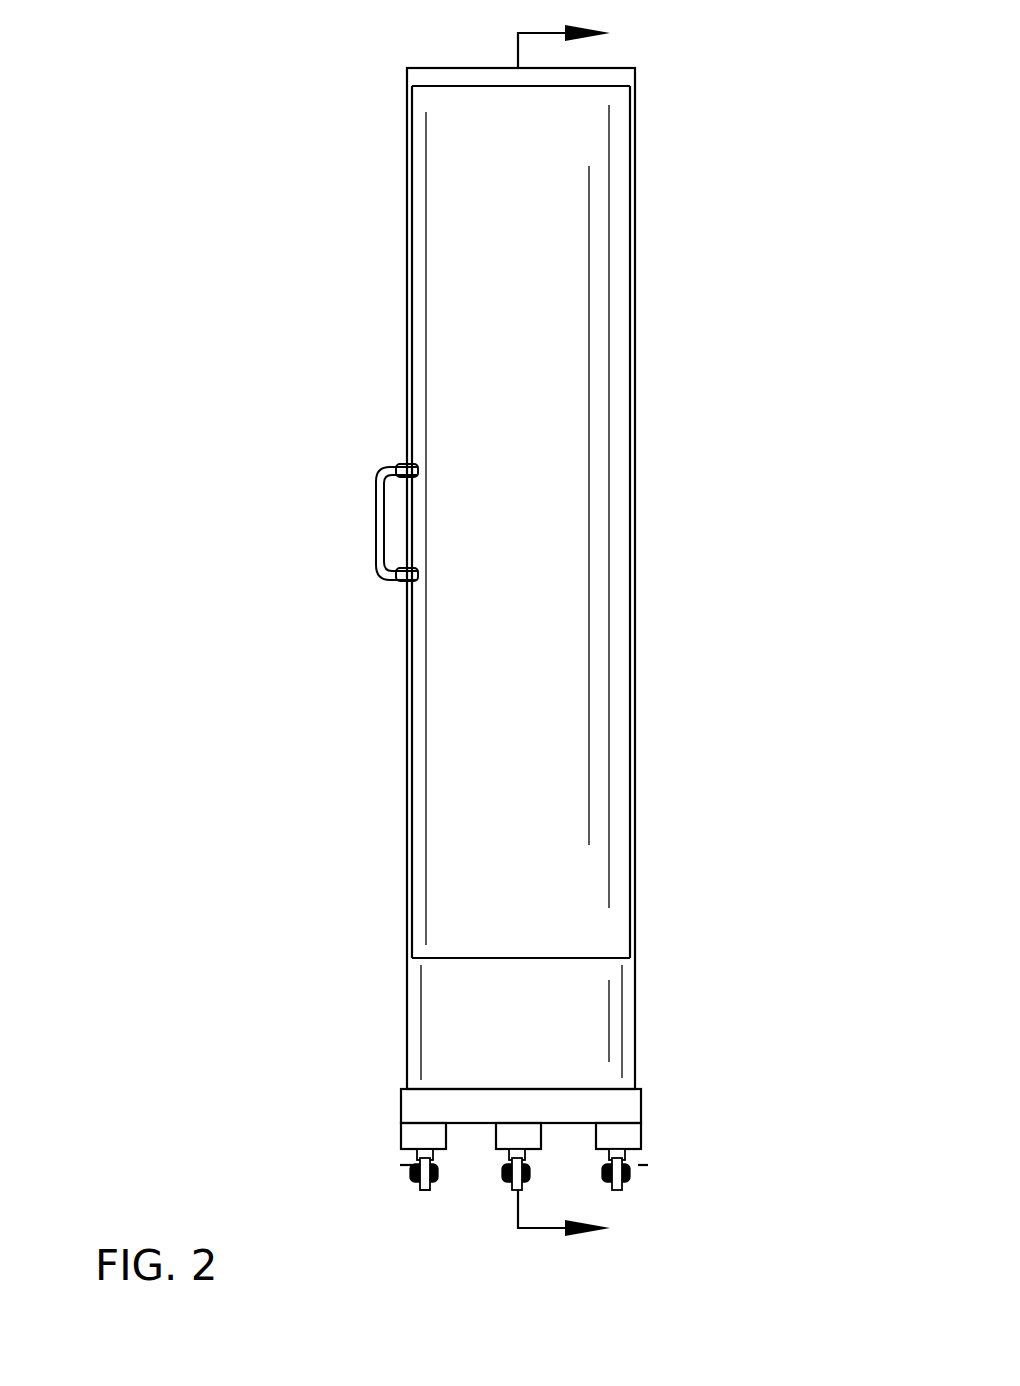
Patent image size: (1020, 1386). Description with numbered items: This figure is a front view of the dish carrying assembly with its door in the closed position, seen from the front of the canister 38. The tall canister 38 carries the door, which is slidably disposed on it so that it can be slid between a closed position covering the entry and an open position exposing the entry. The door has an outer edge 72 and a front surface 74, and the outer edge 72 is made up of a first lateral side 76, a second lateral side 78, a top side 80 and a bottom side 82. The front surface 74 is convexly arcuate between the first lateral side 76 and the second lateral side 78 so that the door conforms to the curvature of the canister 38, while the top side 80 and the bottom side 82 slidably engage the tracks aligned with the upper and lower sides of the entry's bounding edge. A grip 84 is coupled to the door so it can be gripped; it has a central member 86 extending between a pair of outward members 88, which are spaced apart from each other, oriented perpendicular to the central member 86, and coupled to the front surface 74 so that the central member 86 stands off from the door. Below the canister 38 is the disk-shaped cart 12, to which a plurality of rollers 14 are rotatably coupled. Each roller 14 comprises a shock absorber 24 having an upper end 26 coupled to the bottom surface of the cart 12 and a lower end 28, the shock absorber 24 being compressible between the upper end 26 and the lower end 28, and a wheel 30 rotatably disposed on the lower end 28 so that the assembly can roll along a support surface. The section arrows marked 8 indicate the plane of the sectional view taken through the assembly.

The cart 12 is at (641, 1108).
The rollers 14 is at (414, 1220).
The shock absorber 24 is at (401, 1137).
The upper end 26 is at (427, 1118).
The lower end 28 is at (402, 1150).
The wheel 30 is at (425, 1188).
The canister 38 is at (407, 127).
The outer edge 72 is at (412, 819).
The front surface 74 is at (480, 677).
The first lateral side 76 is at (412, 339).
The second lateral side 78 is at (630, 287).
The top side 80 is at (457, 86).
The bottom side 82 is at (563, 958).
The grip 84 is at (384, 475).
The central member 86 is at (384, 521).
The outward members 88 is at (402, 465).
The section line 8- 8 is at (578, 632).